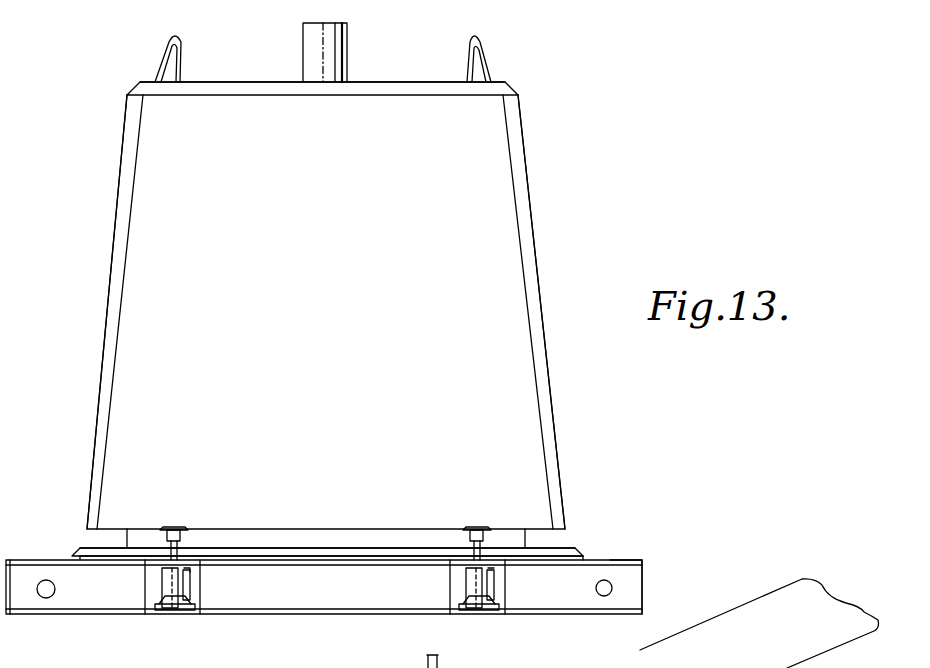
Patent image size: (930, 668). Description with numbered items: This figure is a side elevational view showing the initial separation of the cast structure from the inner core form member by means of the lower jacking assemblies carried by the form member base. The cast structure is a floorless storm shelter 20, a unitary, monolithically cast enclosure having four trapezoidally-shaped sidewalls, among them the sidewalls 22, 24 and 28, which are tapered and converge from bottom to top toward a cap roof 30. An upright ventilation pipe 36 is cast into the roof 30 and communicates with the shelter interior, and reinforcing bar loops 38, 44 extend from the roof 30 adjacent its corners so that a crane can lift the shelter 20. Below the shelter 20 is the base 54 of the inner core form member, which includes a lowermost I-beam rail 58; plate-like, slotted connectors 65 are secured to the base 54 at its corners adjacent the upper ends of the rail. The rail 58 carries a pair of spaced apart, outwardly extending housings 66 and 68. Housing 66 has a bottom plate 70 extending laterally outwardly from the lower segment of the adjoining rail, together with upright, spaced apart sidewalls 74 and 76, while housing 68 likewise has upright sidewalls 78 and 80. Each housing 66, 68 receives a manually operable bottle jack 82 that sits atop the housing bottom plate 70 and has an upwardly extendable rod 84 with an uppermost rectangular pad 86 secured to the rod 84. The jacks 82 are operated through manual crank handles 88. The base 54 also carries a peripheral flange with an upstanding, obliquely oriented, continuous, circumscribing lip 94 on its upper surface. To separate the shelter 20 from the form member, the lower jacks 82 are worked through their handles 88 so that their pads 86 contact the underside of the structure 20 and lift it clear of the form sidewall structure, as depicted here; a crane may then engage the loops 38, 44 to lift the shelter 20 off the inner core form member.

The floorless storm shelter 20 is at (596, 314).
The sidewall 22 is at (460, 247).
The sidewall 24 is at (563, 452).
The sidewall 28 is at (118, 268).
The cap roof 30 is at (250, 80).
The upright ventilation pipe 36 is at (343, 72).
The reinforcing bar loop 38 is at (495, 55).
The reinforcing bar loop 44 is at (170, 52).
The base 54 is at (662, 540).
The I-beam rail 58 is at (625, 575).
The slotted connector 65 is at (50, 598).
The housing 66 is at (215, 556).
The housing 68 is at (410, 560).
The bottom plate 70 is at (180, 614).
The sidewall 74 is at (150, 600).
The sidewall 76 is at (208, 598).
The sidewall 78 is at (455, 600).
The sidewall 80 is at (512, 600).
The bottle jack 82 is at (178, 605).
The upwardly extendable rod 84 is at (220, 559).
The rectangular pad 86 is at (175, 528).
The manual handle 88 is at (203, 571).
The lip 94 is at (90, 548).